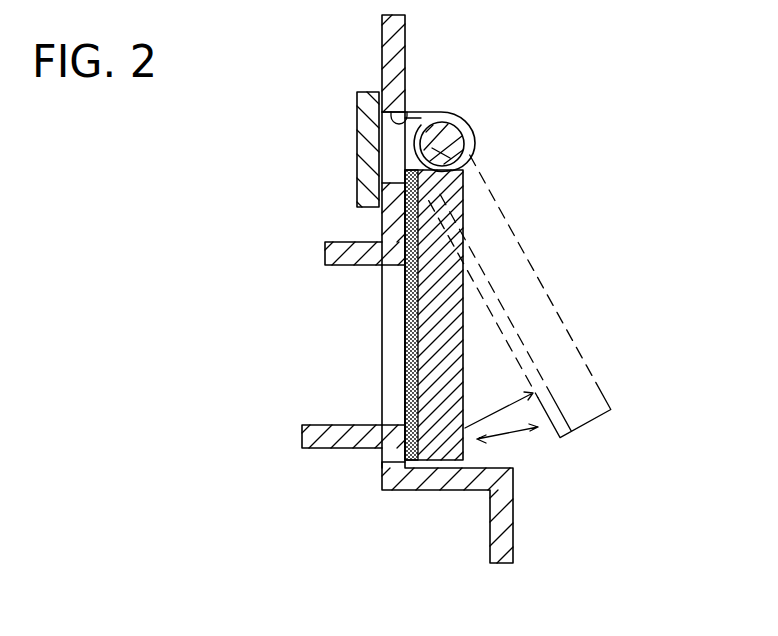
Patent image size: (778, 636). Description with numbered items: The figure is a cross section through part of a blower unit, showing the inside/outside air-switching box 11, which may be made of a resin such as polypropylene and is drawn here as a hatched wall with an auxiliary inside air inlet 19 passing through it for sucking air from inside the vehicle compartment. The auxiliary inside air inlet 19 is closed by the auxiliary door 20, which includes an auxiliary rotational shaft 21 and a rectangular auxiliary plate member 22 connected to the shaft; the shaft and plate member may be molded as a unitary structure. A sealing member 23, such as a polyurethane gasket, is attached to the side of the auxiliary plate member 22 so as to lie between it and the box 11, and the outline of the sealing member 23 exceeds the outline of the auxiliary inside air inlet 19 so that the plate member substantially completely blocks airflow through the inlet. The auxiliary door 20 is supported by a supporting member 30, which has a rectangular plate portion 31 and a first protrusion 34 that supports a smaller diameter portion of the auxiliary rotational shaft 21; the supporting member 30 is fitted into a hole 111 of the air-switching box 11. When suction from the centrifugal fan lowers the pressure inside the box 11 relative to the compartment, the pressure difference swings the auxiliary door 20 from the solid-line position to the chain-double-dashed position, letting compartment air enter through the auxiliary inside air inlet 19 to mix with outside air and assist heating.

The inside/outside air-switching box 11 is at (396, 463).
The auxiliary inside air inlet 19 is at (390, 357).
The auxiliary door 20 is at (539, 292).
The auxiliary rotational shaft 21 is at (455, 147).
The auxiliary plate member 22 is at (447, 318).
The sealing member 23 is at (440, 368).
The supporting member 30 is at (309, 146).
The plate portion 31 is at (368, 127).
The first protrusion 34 is at (428, 122).
The hole 111 is at (413, 110).